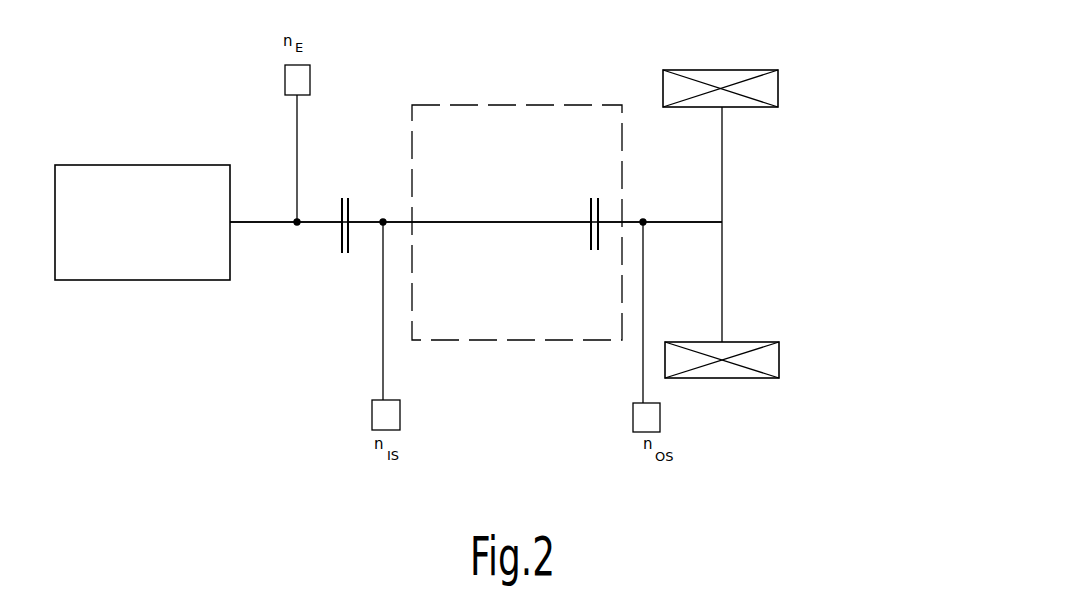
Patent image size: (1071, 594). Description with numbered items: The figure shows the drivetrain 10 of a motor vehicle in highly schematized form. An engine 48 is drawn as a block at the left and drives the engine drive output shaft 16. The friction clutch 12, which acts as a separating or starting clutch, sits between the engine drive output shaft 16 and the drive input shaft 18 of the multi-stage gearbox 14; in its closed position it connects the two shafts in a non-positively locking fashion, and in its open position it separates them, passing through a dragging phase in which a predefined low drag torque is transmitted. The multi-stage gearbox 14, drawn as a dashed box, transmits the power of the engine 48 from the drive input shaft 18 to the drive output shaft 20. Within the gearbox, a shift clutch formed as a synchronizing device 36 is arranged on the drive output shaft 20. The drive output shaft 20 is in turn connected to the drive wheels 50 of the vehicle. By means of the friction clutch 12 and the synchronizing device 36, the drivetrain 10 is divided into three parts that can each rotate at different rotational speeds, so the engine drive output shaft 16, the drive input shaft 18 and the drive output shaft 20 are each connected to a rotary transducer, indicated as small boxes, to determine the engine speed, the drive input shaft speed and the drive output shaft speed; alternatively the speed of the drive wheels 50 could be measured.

The drivetrain 10 is at (275, 367).
The friction clutch 12 is at (331, 203).
The multi-stage gearbox 14 is at (506, 103).
The engine drive output shaft 16 is at (256, 224).
The drive input shaft 18 is at (366, 228).
The drive output shaft 20 is at (668, 222).
The synchronizing device 36 is at (574, 199).
The engine 48 is at (102, 282).
The drive wheels 50 is at (752, 108).